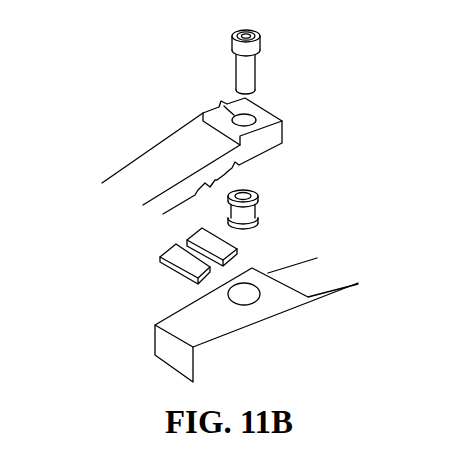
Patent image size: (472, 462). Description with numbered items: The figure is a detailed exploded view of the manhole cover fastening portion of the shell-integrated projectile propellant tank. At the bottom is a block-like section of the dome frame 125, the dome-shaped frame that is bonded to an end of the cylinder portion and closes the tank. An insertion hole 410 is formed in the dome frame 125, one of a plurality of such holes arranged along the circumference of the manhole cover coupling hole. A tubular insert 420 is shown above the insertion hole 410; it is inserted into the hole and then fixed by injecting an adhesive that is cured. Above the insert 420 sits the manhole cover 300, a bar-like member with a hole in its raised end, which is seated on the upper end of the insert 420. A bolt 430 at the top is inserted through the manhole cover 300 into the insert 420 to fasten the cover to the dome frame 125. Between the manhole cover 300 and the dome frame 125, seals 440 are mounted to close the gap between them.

The manhole cover 300 is at (207, 150).
The bolt 430 is at (245, 70).
The insert 420 is at (258, 207).
The seal 440 is at (158, 255).
The dome frame 125 is at (270, 325).
The insertion hole 410 is at (251, 297).